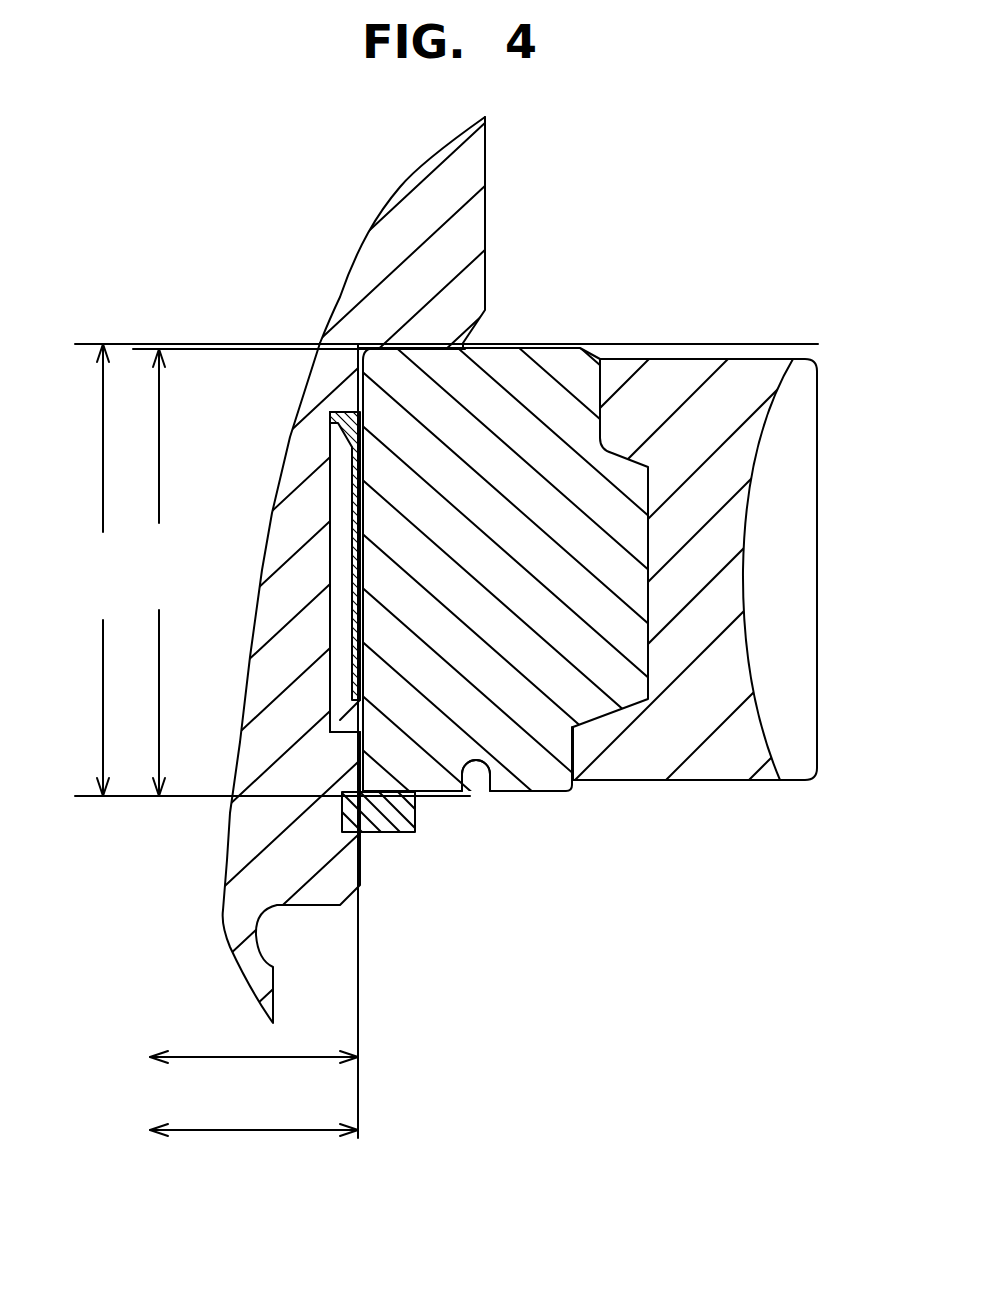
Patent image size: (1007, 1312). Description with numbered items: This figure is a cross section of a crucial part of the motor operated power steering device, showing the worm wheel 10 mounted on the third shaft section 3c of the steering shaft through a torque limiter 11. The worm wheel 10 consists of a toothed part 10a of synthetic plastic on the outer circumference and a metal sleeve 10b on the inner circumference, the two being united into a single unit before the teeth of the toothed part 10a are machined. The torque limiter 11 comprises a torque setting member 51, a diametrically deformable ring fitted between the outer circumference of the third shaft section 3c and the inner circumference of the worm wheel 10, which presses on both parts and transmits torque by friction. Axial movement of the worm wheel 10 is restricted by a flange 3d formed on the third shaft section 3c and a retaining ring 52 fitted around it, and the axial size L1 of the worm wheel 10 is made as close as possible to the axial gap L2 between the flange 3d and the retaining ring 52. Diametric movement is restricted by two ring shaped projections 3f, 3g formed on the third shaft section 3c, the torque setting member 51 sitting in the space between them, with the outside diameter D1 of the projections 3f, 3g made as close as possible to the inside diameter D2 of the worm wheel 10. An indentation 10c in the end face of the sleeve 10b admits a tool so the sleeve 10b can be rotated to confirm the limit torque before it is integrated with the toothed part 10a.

The third shaft section 3c is at (457, 193).
The flange 3d is at (457, 258).
The ring shaped projection 3f is at (347, 397).
The ring shaped projection 3g is at (250, 828).
The worm wheel 10 is at (760, 266).
The toothed part 10a is at (708, 373).
The sleeve 10b is at (575, 363).
The indentation 10c is at (484, 773).
The torque limiter 11 is at (340, 558).
The torque setting member 51 is at (355, 626).
The retaining ring 52 is at (403, 820).
The axial size of the worm wheel L1 is at (161, 572).
The axial gap between the flange and the retaining ring L2 is at (105, 570).
The outside diameter of the two projections D1 is at (238, 1057).
The inside diameter of the worm wheel D2 is at (268, 1130).